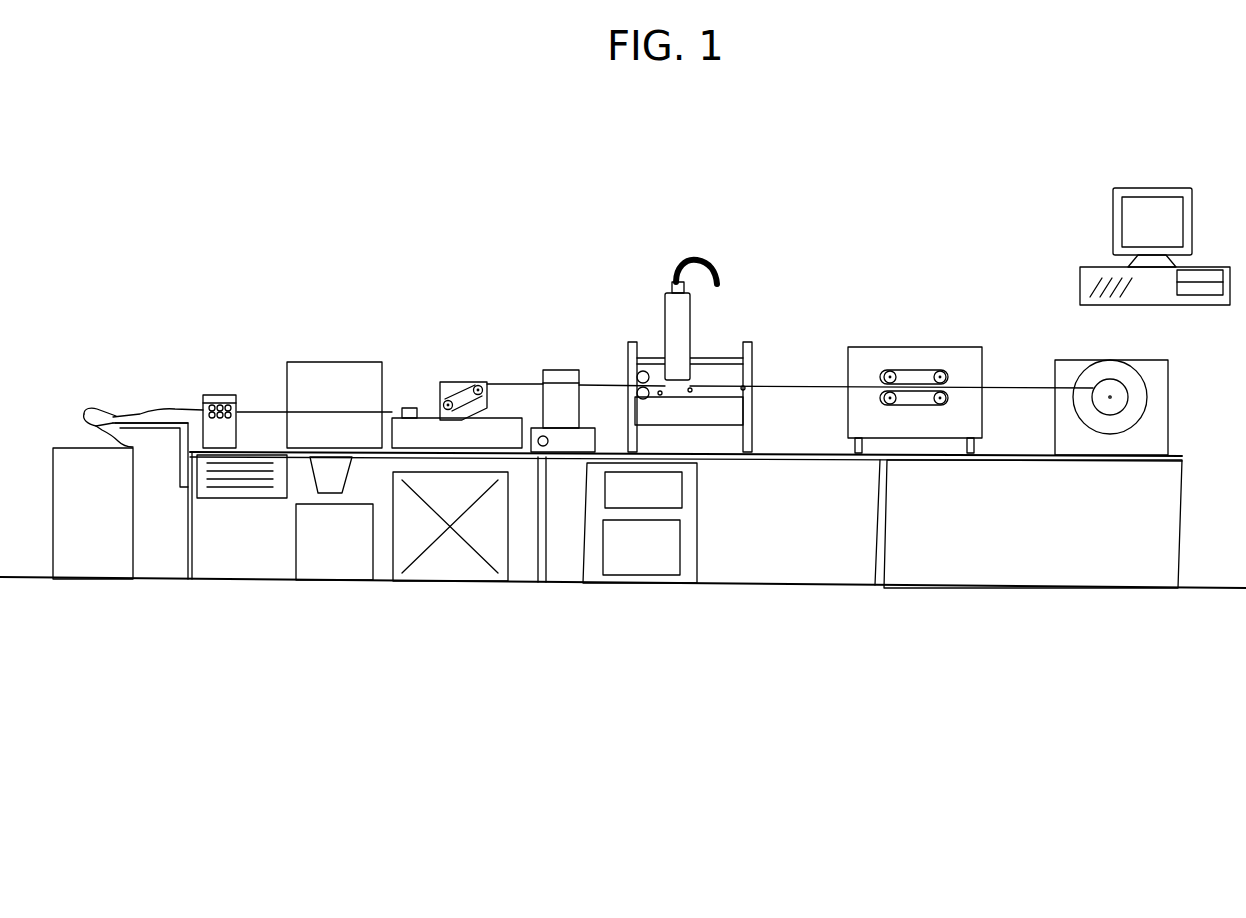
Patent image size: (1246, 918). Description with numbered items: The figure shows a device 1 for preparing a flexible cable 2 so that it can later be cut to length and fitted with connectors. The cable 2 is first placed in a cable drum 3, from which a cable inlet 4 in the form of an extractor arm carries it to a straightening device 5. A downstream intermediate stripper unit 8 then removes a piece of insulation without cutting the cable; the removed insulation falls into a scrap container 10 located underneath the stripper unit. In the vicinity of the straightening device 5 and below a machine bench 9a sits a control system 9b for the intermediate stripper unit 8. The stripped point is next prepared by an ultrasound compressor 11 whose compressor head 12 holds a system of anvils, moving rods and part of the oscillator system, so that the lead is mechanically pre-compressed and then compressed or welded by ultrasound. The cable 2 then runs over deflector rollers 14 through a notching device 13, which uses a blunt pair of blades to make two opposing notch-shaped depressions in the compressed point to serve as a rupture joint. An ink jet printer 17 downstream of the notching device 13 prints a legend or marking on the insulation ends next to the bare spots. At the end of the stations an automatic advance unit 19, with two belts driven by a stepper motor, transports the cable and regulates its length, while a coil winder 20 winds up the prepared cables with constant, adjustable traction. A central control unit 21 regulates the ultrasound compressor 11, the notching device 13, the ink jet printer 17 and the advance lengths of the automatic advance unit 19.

The device 1 is at (196, 241).
The cable 2 is at (155, 413).
The cable drum 3 is at (98, 563).
The cable inlet 4 is at (113, 415).
The straightening device 5 is at (215, 396).
The intermediate stripper unit 8 is at (345, 388).
The machine bench 9a is at (792, 460).
The control system 9b is at (247, 455).
The scrap container 10 is at (347, 566).
The ultrasound compressor 11 is at (459, 553).
The compressor head 12 is at (434, 423).
The notching device 13 is at (562, 372).
The deflector rollers 14 is at (458, 388).
The ink jet printer 17 is at (600, 475).
The automatic advance unit 19 is at (866, 360).
The coil winder 20 is at (1066, 372).
The central control unit 21 is at (1092, 272).